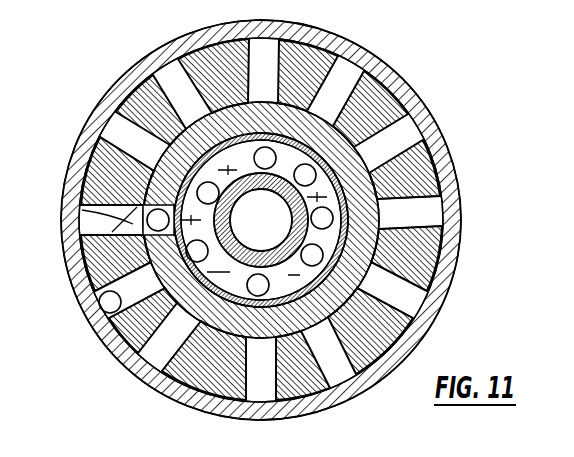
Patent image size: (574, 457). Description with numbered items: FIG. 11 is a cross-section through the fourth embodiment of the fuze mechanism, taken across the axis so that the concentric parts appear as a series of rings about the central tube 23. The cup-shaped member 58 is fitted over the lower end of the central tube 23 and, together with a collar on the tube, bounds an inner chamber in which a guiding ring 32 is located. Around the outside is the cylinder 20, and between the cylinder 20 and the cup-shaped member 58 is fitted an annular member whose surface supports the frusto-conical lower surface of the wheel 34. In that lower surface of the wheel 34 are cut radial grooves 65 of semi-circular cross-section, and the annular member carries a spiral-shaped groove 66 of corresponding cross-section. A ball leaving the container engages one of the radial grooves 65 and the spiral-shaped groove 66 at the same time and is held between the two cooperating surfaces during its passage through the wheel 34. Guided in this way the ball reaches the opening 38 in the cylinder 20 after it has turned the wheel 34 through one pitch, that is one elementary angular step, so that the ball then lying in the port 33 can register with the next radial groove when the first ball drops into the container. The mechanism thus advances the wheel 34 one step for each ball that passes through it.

The cylinder 20 is at (424, 121).
The wheel 34 is at (421, 263).
The radial grooves 65 is at (431, 221).
The guiding ring 32 is at (204, 138).
The cup-shaped member 58 is at (352, 166).
The central tube 23 is at (224, 219).
The port 33 is at (158, 203).
The spiral-shaped groove 66 is at (82, 213).
The opening 38 is at (102, 318).